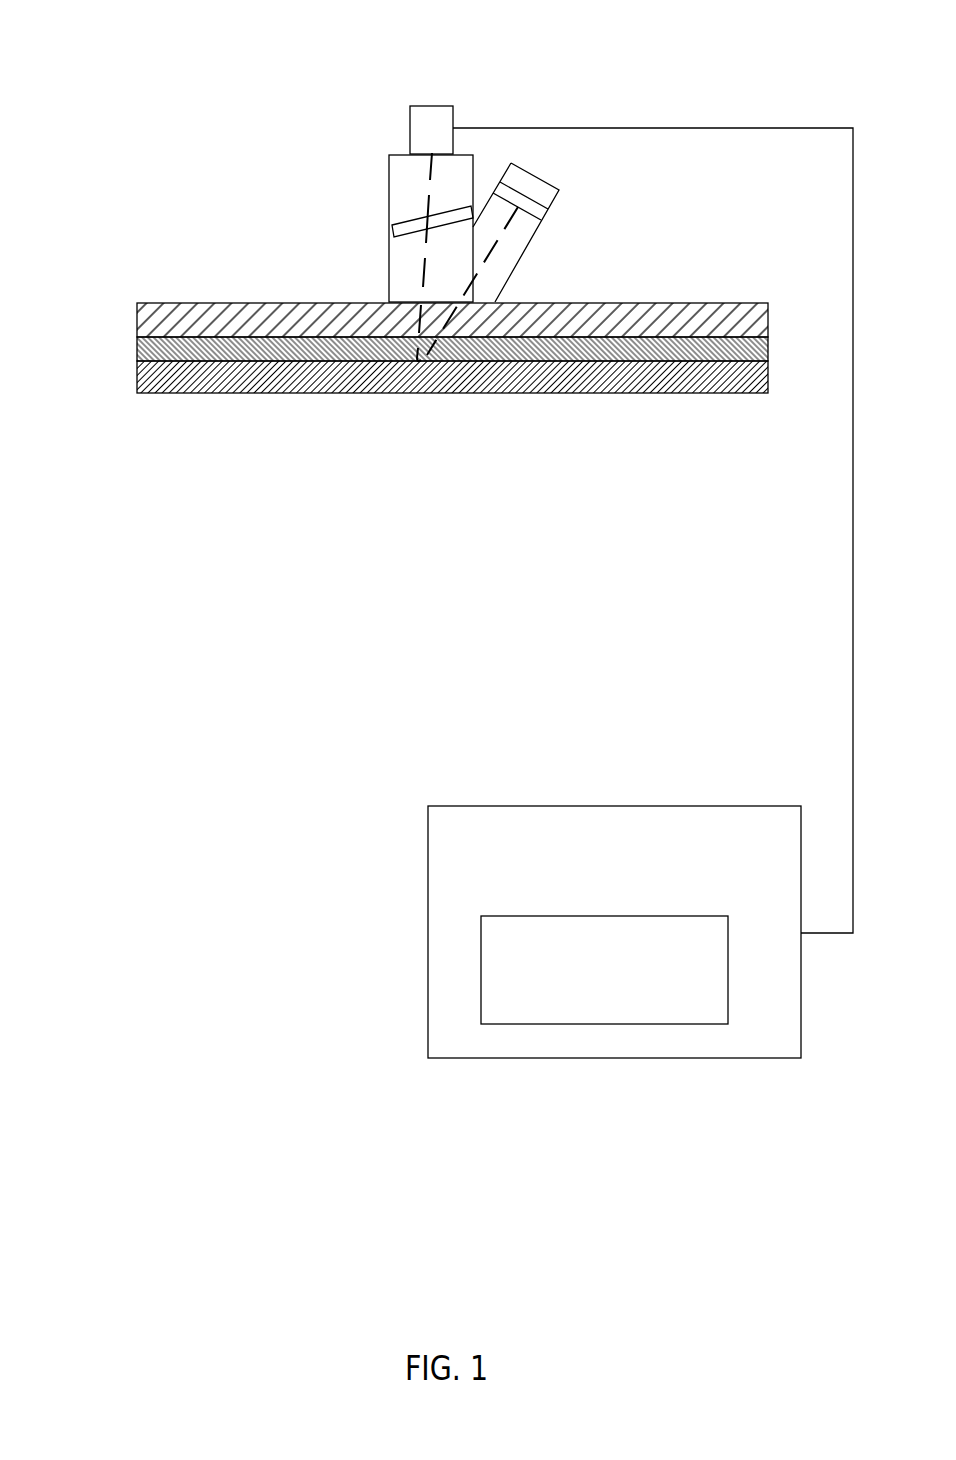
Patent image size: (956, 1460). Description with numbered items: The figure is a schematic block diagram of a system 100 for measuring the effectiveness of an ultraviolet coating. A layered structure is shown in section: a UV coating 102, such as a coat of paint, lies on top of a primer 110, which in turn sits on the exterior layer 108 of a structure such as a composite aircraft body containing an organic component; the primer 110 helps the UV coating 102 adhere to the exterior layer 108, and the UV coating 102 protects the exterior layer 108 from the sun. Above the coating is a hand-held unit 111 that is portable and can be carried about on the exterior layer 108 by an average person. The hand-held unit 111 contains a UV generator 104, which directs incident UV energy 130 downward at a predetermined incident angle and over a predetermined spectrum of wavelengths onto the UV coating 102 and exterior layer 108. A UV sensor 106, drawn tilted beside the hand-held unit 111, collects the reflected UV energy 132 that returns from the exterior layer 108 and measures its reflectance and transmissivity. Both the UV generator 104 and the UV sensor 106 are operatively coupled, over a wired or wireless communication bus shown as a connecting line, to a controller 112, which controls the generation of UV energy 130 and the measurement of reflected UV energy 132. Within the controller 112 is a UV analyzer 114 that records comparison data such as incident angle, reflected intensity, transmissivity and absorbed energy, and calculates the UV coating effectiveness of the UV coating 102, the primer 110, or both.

The system 100 is at (150, 100).
The UV coating 102 is at (137, 322).
The UV generator 104 is at (410, 138).
The UV sensor 106 is at (559, 190).
The exterior layer 108 is at (233, 393).
The primer 110 is at (137, 350).
The hand-held unit 111 is at (380, 203).
The controller 112 is at (614, 932).
The UV analyzer 114 is at (604, 970).
The UV energy 130 is at (422, 282).
The reflected UV energy 132 is at (495, 242).